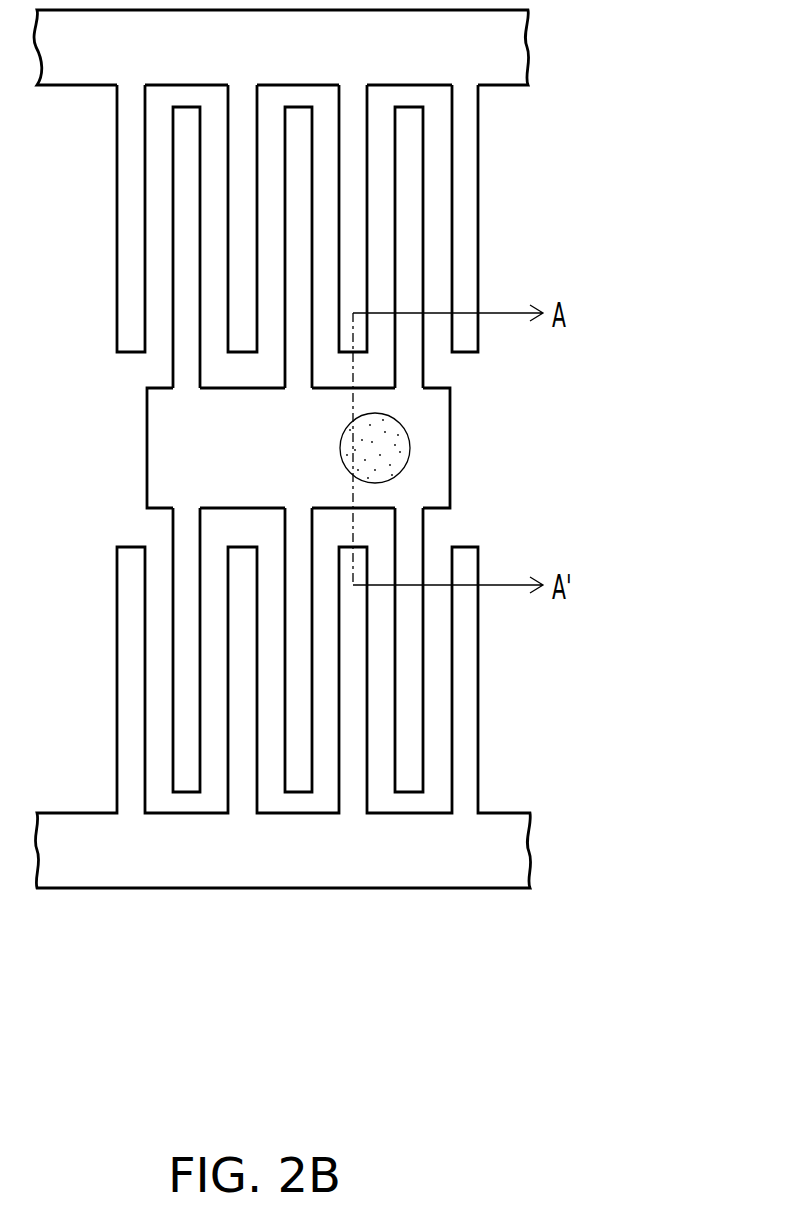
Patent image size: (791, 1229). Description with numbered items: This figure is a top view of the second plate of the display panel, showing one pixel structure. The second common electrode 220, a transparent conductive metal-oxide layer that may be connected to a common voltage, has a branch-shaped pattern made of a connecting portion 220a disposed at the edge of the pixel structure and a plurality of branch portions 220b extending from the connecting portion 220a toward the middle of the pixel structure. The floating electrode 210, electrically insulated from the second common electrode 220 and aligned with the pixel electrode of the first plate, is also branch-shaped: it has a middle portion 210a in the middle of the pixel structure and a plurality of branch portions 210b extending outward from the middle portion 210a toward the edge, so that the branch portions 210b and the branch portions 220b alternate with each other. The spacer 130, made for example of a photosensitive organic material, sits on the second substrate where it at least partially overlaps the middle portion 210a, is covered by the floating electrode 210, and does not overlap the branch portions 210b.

The spacer 130 is at (410, 446).
The floating electrode 210 is at (408, 725).
The middle portion 210a is at (452, 402).
The branch portions 210b is at (407, 280).
The second common electrode 220 is at (463, 670).
The connecting portion 220a is at (488, 47).
The branch portions 220b is at (465, 147).